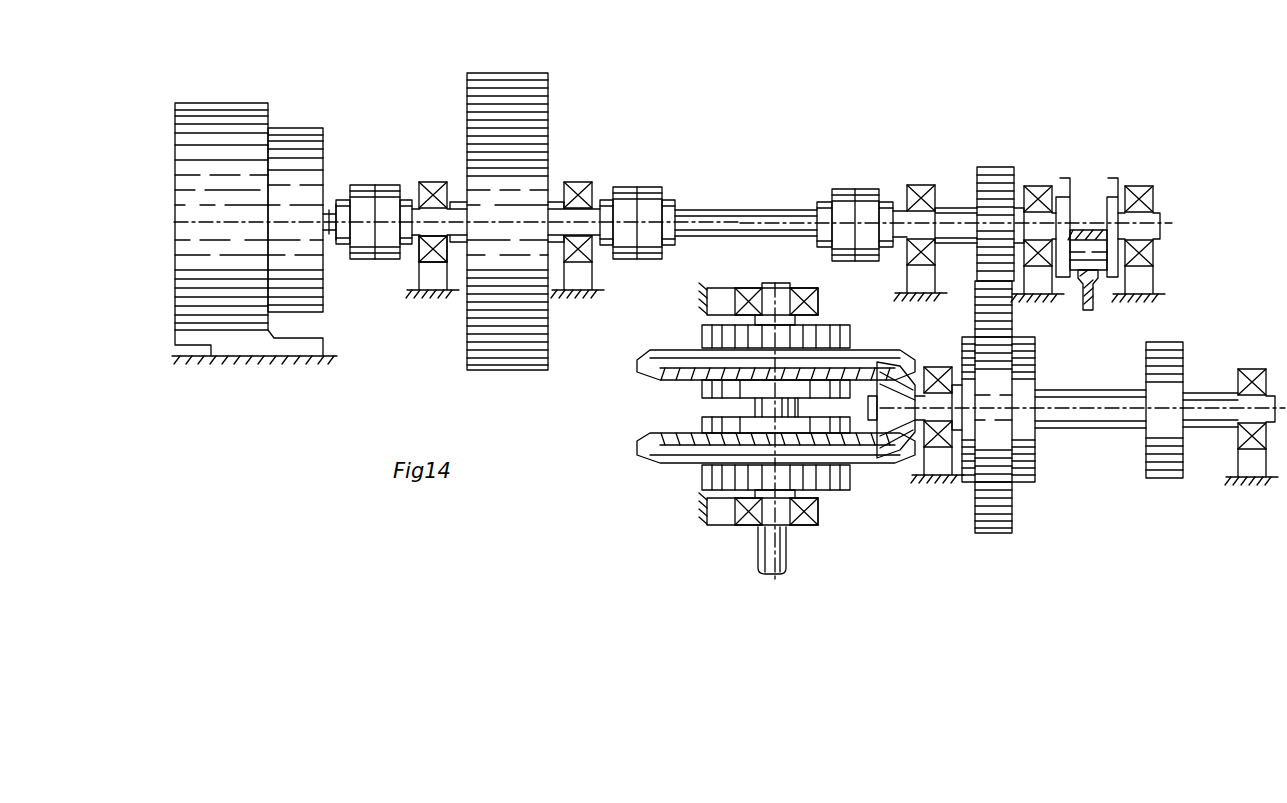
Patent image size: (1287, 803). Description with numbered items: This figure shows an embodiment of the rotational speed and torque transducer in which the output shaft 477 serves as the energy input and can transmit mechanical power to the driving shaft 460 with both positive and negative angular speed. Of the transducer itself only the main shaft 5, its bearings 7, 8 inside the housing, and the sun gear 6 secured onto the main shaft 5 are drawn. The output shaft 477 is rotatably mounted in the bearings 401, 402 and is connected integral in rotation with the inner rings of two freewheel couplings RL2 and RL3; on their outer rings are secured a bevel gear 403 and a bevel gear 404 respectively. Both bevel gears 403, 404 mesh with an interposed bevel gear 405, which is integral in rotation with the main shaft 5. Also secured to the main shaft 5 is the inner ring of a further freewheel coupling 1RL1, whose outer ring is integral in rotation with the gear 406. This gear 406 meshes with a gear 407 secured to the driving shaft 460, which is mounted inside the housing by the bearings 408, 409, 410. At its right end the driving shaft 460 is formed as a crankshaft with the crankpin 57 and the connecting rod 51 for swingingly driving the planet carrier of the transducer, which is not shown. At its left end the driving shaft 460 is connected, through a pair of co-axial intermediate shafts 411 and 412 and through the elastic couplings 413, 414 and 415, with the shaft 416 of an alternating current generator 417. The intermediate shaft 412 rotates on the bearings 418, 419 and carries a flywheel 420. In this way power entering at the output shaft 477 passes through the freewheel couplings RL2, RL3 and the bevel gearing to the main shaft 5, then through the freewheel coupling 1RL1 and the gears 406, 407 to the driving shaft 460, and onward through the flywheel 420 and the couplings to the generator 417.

The alternating current generator 417 is at (270, 94).
The shaft of the alternating current generator 416 is at (332, 214).
The elastic coupling 415 is at (373, 185).
The intermediate shaft 412 is at (455, 207).
The bearing 418 is at (420, 250).
The flywheel 420 is at (540, 89).
The bearing 419 is at (579, 188).
The elastic coupling 414 is at (651, 190).
The intermediate shaft 411 is at (742, 212).
The elastic coupling 413 is at (838, 193).
The bearing 408 is at (926, 190).
The driving shaft 460 is at (962, 212).
The gear 407 is at (1012, 168).
The bearing 409 is at (1042, 190).
The crankpin 57 is at (1083, 250).
The connecting rod 51 is at (1094, 304).
The bearing 410 is at (1160, 177).
The bearing 401 is at (745, 297).
The freewheel coupling RL2 is at (696, 330).
The bevel gear 403 is at (658, 370).
The bevel gear 404 is at (653, 447).
The freewheel coupling RL3 is at (695, 483).
The bearing 402 is at (746, 526).
The output shaft 477 is at (788, 553).
The interposed bevel gear 405 is at (898, 372).
The bearing 7 is at (936, 373).
The freewheel coupling 1RL1 is at (1062, 360).
The gear 406 is at (1013, 514).
The main shaft 5 is at (1101, 421).
The sun gear 6 is at (1147, 467).
The bearing 8 is at (1250, 372).